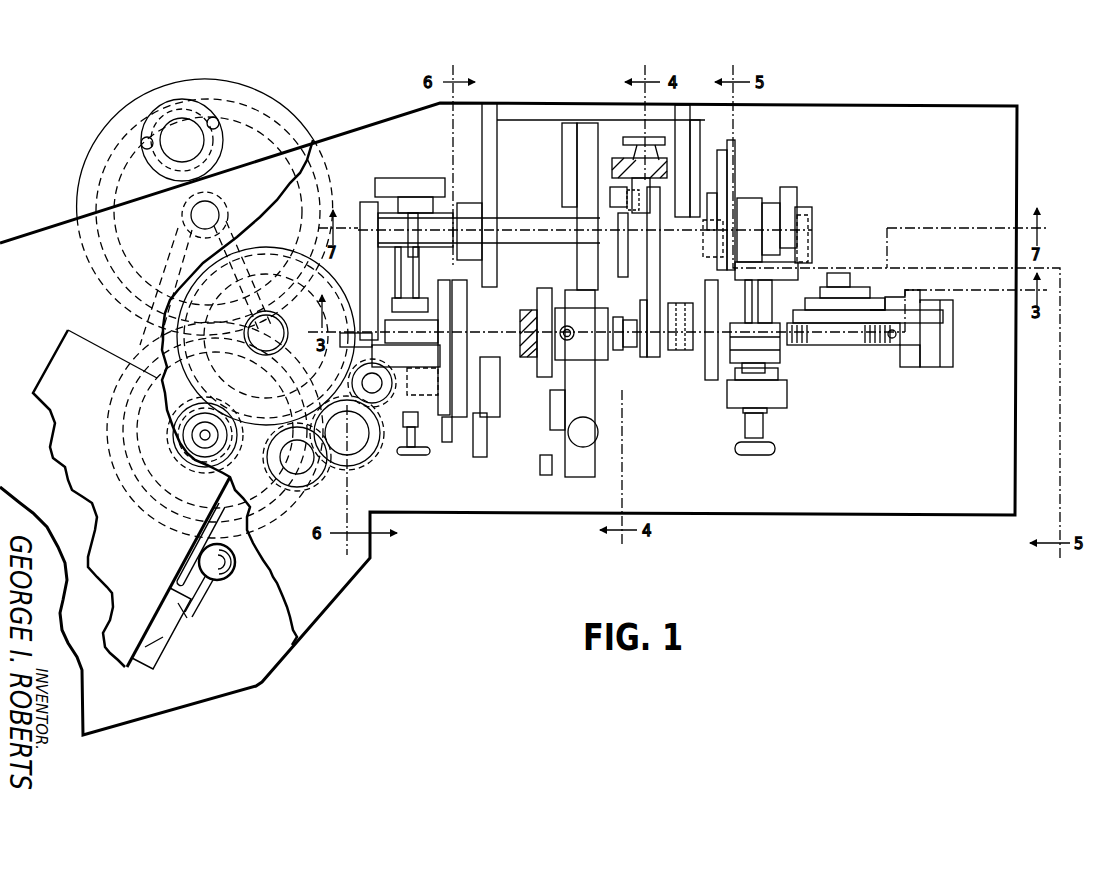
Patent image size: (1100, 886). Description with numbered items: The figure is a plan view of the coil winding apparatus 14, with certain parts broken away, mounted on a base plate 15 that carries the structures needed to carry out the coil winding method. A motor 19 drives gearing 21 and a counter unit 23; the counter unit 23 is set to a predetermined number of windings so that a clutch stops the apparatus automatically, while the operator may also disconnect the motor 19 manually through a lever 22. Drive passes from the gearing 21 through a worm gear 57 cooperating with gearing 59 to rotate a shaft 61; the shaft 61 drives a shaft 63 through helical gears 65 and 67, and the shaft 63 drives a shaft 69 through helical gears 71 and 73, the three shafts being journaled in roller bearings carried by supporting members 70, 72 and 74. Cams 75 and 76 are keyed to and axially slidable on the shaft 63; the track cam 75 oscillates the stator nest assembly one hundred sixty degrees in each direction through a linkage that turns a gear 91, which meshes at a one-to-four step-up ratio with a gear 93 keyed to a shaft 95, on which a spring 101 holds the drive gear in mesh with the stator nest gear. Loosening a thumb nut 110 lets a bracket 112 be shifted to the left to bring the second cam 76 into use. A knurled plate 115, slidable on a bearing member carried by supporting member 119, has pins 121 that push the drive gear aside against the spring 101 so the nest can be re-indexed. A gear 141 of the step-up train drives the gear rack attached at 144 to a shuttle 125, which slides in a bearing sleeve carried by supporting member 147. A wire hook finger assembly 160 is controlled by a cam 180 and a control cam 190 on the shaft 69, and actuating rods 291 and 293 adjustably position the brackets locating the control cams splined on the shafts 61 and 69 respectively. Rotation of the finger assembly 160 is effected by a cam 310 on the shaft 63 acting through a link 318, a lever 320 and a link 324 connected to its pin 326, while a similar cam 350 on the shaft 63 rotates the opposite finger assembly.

The coil winding apparatus 14 is at (374, 105).
The base plate 15 is at (789, 508).
The motor 19 is at (243, 83).
The gearing 21 is at (332, 272).
The lever 22 is at (225, 577).
The counter unit 23 is at (146, 557).
The worm gear 57 is at (352, 376).
The gearing 59 is at (420, 385).
The shaft 61 is at (420, 277).
The shaft 63 is at (536, 220).
The helical gear 65 is at (388, 213).
The helical gear 67 is at (415, 205).
The shaft 69 is at (765, 305).
The supporting member 70 is at (400, 178).
The helical gear 71 is at (762, 205).
The supporting member 72 is at (360, 215).
The helical gear 73 is at (810, 225).
The supporting member 74 is at (797, 195).
The track cam 75 is at (616, 242).
The cam 76 is at (647, 280).
The gear 91 is at (665, 300).
The gear 93 is at (660, 352).
The shaft 95 is at (630, 348).
The spring 101 is at (618, 350).
The thumb nut 110 is at (645, 158).
The bracket 112 is at (630, 138).
The knurled plate 115 is at (548, 314).
The supporting member 119 is at (529, 357).
The pins 121 is at (550, 300).
The shuttle 125 is at (915, 345).
The gear 141 is at (840, 338).
The rack attachment 144 is at (892, 340).
The supporting member 147 is at (953, 321).
The wire hook finger assembly 160 is at (712, 378).
The cam 180 is at (768, 330).
The control cam 190 is at (768, 343).
The actuating rod 291 is at (415, 455).
The actuating rod 293 is at (745, 425).
The cam 310 is at (710, 250).
The link 318 is at (722, 172).
The lever 320 is at (715, 165).
The link 324 is at (735, 180).
The pin 326 is at (770, 296).
The cam 350 is at (462, 213).